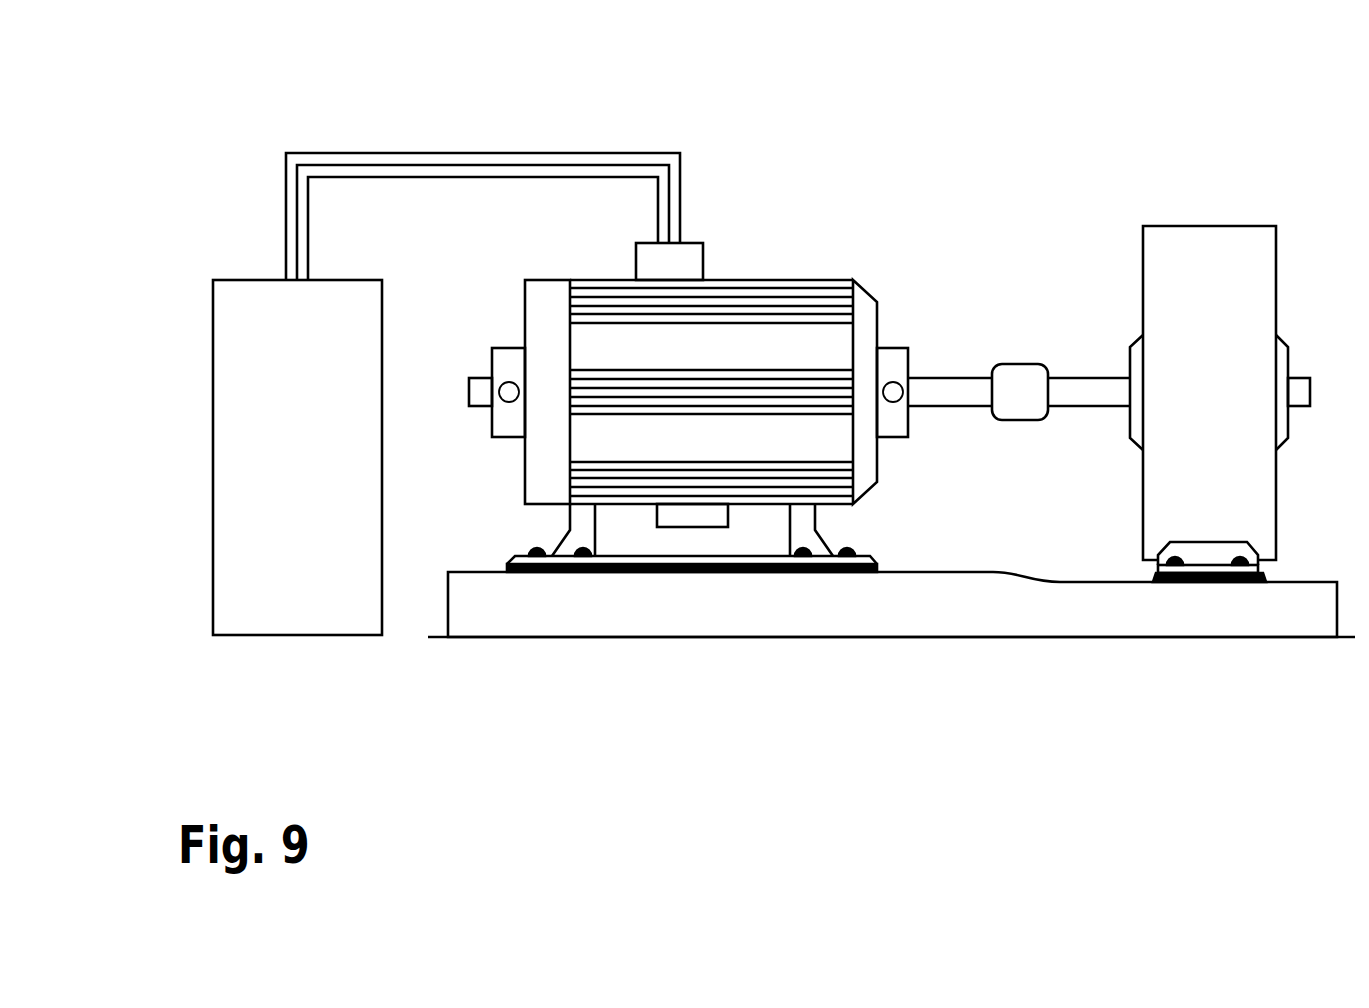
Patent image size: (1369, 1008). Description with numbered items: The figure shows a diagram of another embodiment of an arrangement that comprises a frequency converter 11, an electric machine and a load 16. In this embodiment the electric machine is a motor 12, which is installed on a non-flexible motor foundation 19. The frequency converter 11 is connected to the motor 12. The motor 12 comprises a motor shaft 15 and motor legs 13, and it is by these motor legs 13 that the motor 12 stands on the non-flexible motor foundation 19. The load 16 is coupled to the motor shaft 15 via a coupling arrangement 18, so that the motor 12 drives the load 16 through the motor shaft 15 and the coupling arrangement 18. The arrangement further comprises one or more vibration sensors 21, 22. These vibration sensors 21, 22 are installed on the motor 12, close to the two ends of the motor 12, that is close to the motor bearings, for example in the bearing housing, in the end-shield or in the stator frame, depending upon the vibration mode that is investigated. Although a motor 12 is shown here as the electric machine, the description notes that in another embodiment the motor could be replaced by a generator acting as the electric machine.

The frequency converter 11 is at (233, 310).
The motor 12 is at (767, 358).
The motor legs 13 is at (628, 527).
The motor shaft 15 is at (943, 390).
The load 16 is at (1188, 303).
The coupling arrangement 18 is at (1013, 383).
The non-flexible motor foundation 19 is at (1017, 603).
The vibration sensor 21 is at (509, 402).
The vibration sensor 22 is at (893, 402).